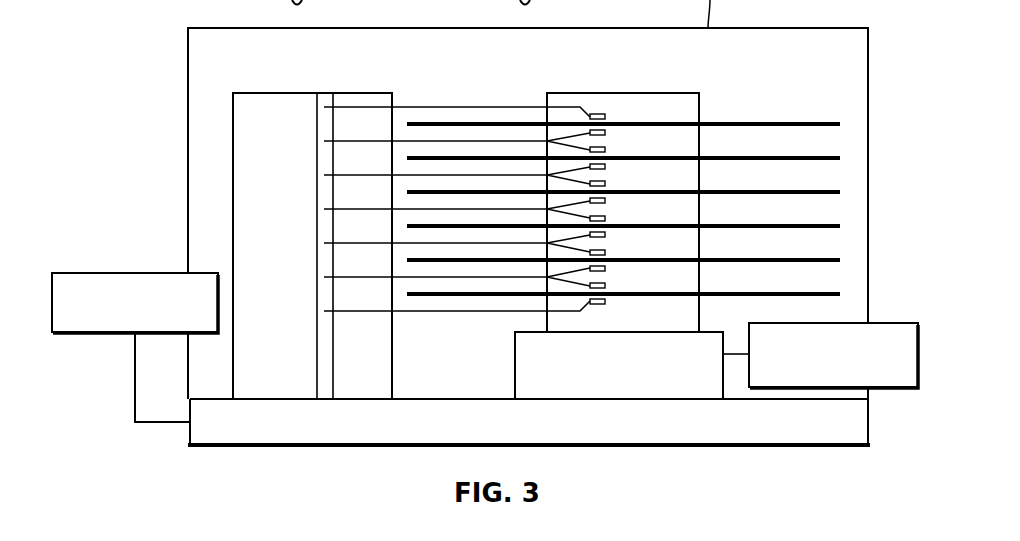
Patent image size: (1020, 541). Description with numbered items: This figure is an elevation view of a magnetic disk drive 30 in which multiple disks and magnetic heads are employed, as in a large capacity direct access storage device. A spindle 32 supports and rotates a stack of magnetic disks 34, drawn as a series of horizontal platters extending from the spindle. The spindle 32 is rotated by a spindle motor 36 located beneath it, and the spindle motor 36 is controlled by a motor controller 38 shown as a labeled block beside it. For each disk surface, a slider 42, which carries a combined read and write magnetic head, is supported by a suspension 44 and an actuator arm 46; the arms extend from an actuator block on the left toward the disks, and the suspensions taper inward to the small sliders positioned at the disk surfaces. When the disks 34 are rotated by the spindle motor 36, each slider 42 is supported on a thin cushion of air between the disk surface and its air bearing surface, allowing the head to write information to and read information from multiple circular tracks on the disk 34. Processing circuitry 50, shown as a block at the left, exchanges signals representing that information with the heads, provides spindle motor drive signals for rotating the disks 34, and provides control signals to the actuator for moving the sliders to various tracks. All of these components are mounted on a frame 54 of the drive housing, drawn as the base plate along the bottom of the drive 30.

The magnetic disk drive 30 is at (752, 92).
The spindle 32 is at (678, 92).
The magnetic disk 34 is at (815, 126).
The spindle motor 36 is at (608, 381).
The motor controller 38 is at (905, 389).
The slider 42 is at (598, 152).
The suspension 44 is at (592, 120).
The actuator arm 46 is at (498, 140).
The processing circuitry 50 is at (114, 273).
The frame 54 is at (310, 447).